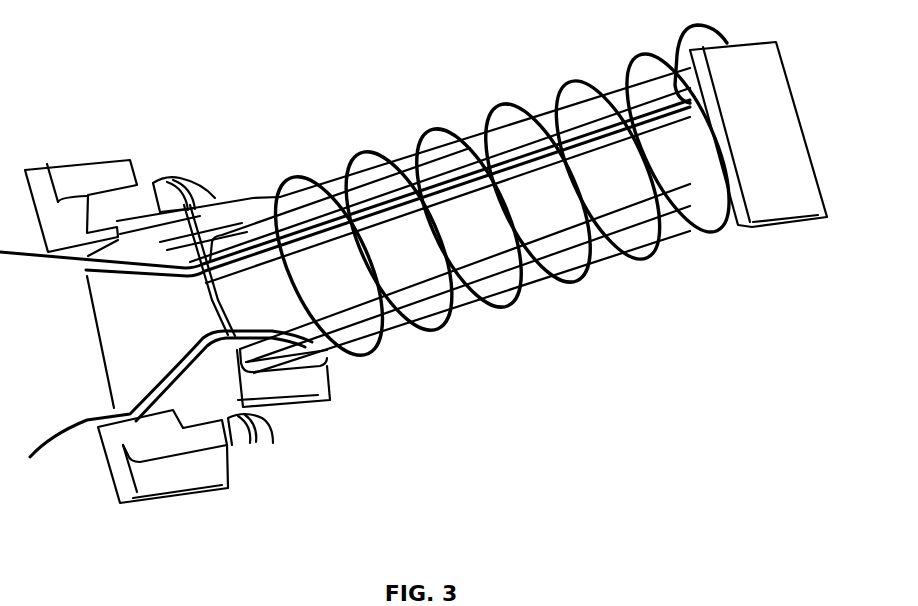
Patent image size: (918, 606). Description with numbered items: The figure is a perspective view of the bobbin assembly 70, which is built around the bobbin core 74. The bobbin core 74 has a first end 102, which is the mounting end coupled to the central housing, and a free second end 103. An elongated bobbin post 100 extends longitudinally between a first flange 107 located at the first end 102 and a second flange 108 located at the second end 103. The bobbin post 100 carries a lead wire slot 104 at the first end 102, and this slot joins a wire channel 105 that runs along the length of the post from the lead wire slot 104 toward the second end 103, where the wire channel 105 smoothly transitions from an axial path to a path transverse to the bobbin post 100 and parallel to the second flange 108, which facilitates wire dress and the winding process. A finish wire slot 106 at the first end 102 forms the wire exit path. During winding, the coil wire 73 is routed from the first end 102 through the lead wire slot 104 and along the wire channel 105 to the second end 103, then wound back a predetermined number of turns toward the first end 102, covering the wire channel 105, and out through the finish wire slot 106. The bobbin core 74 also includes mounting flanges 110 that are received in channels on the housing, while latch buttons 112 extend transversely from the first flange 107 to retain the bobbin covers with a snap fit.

The bobbin assembly 70 is at (204, 55).
The coil wire 73 is at (653, 257).
The bobbin core 74 is at (339, 170).
The bobbin post 100 is at (577, 95).
The first end 102 is at (114, 148).
The second end 103 is at (797, 58).
The lead wire slot 104 is at (78, 268).
The wire channel 105 is at (436, 176).
The finish wire slot 106 is at (130, 408).
The first flange 107 is at (328, 378).
The second flange 108 is at (798, 148).
The mounting flanges 110 is at (33, 178).
The latch buttons 112 is at (198, 190).